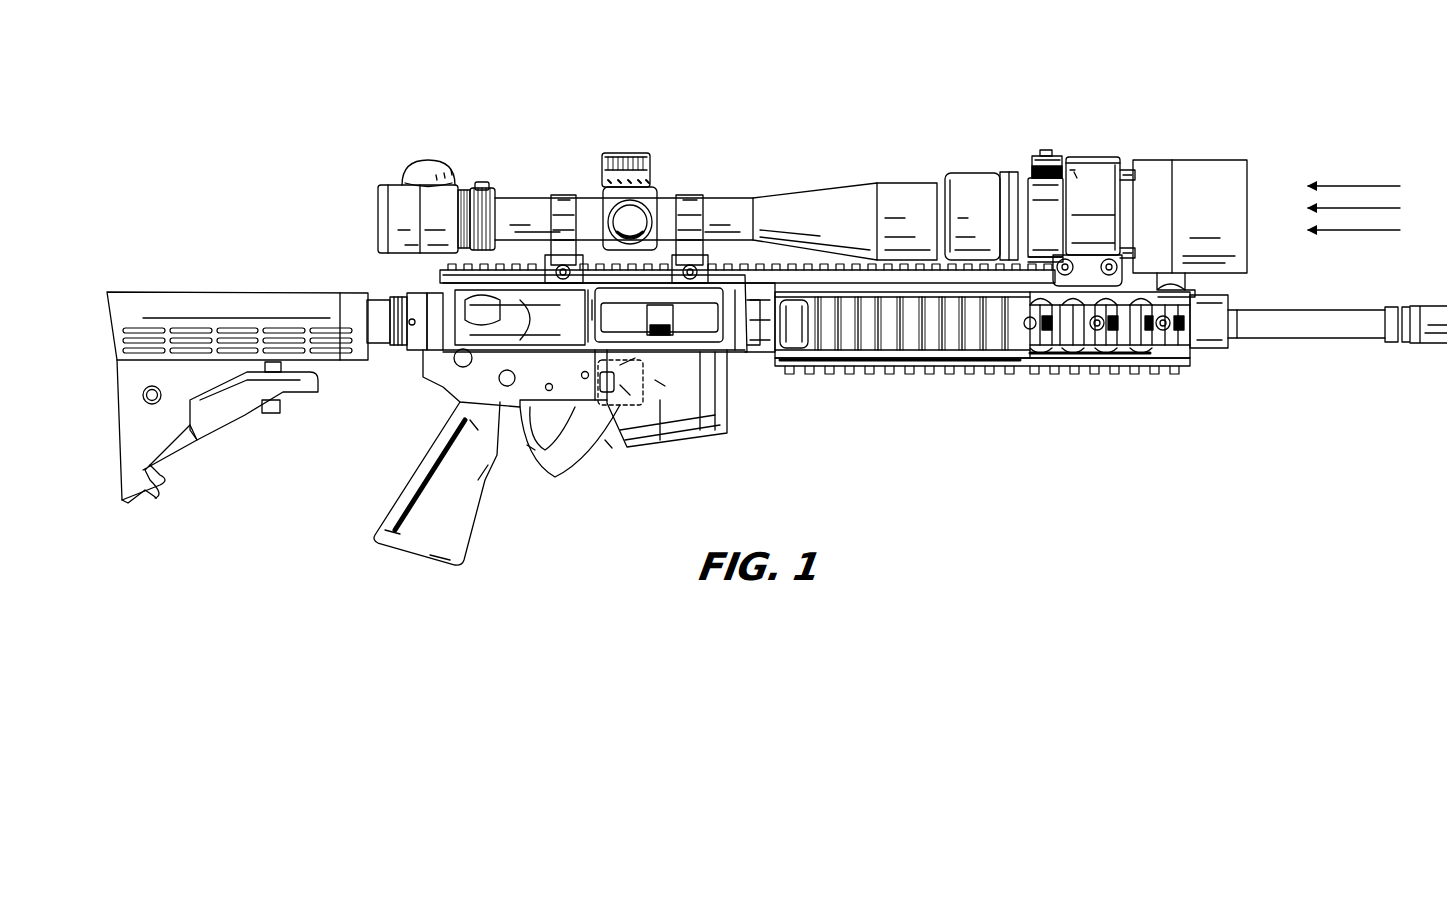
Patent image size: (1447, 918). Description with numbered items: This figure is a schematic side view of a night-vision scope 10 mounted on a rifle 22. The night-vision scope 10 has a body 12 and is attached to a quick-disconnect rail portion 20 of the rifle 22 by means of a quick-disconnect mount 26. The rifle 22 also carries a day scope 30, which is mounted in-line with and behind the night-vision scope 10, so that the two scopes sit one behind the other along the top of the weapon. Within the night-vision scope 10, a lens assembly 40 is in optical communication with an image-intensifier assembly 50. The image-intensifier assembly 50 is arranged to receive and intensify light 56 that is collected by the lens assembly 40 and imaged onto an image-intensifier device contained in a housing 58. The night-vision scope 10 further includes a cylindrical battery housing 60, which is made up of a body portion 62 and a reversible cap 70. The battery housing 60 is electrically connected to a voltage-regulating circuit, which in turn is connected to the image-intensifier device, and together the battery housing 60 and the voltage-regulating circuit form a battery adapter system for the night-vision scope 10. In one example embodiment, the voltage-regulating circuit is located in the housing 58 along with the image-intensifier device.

The night-vision scope 10 is at (1116, 82).
The body 12 is at (1080, 148).
The quick-disconnect rail portion 20 is at (723, 400).
The rifle 22 is at (924, 432).
The quick-disconnect mount 26 is at (1087, 273).
The day scope 30 is at (388, 172).
The lens assembly 40 is at (1200, 172).
The image-intensifier assembly 50 is at (1126, 112).
The light 56 is at (1356, 170).
The housing 58 is at (1097, 156).
The cylindrical battery housing 60 is at (890, 96).
The body portion 62 is at (1040, 205).
The reversible cap 70 is at (1027, 163).